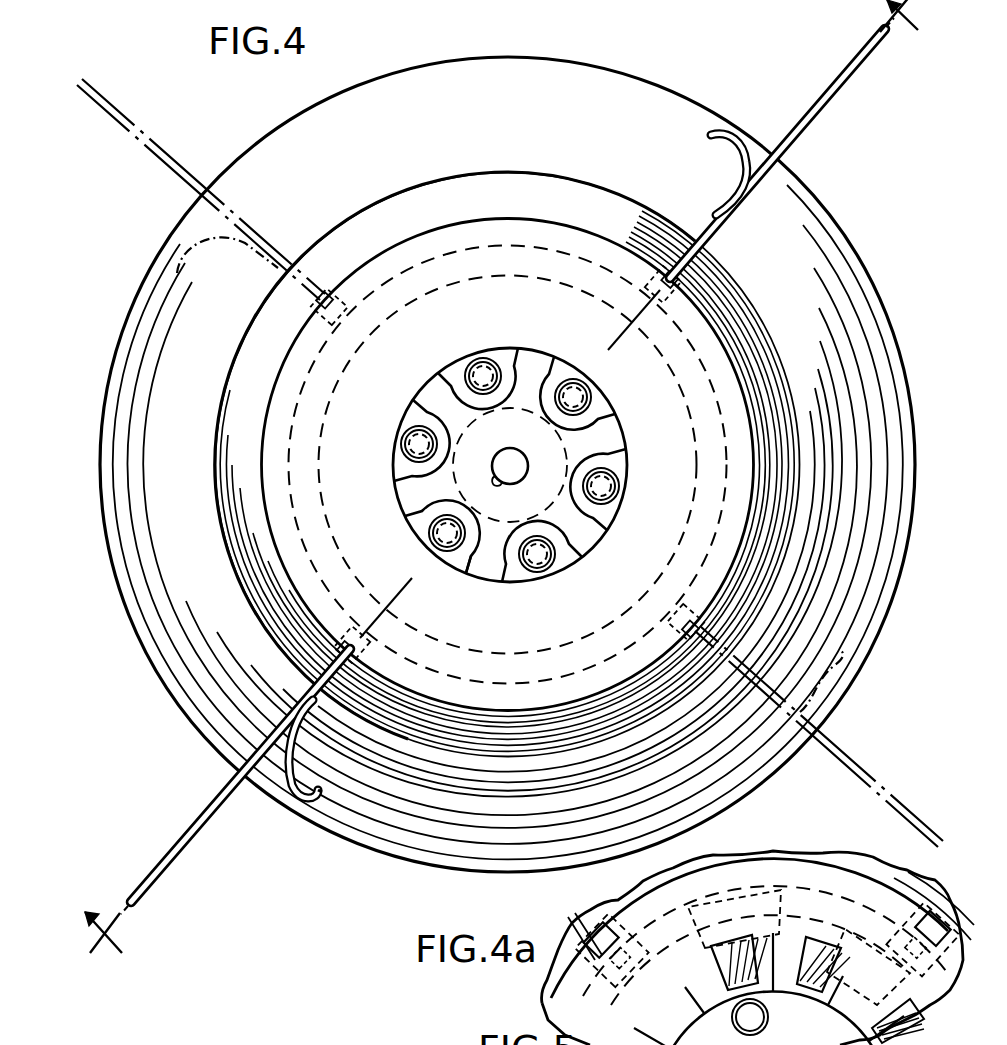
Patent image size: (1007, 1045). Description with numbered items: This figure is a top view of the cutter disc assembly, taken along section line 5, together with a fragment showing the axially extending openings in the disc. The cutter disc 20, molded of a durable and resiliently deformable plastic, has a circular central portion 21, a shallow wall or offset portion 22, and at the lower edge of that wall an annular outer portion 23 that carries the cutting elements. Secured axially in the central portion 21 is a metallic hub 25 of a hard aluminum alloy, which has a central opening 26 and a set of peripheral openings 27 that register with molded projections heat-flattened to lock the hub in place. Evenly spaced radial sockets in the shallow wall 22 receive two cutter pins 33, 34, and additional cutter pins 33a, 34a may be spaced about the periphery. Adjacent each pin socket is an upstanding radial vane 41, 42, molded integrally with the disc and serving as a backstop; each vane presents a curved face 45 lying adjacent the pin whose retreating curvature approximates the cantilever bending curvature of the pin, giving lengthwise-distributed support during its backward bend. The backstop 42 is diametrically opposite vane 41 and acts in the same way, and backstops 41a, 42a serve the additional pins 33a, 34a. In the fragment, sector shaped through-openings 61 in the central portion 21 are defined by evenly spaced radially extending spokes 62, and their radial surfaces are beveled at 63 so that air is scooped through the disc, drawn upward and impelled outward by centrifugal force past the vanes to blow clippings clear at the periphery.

In FIG. 4, the section line 5- 5 is at (509, 482).
In FIG. 4, the cutter disc 20 is at (688, 80).
In FIG. 4, the circular central portion 21 is at (672, 477).
In FIG. 4a, the circular central portion 21 is at (868, 890).
In FIG. 4, the shallow wall or offset portion 22 is at (760, 575).
In FIG. 4, the annular outer portion 23 is at (636, 157).
In FIG. 4, the metallic hub 25 is at (560, 460).
In FIG. 4, the central opening 26 is at (500, 478).
In FIG. 4, the peripheral openings 27 is at (452, 576).
In FIG. 4, the cutter pin 33 is at (817, 130).
In FIG. 4, the cutter pin 34 is at (183, 856).
In FIG. 4, the cutter pin 33a is at (150, 130).
In FIG. 4, the cutter pin 34a is at (860, 796).
In FIG. 4, the radial vane 41 is at (728, 197).
In FIG. 4, the radial vane 42 is at (325, 803).
In FIG. 4, the backstop 41a is at (226, 268).
In FIG. 4, the backstop 42a is at (830, 714).
In FIG. 4, the curved face 45 is at (745, 150).
In FIG. 4a, the sector shaped through-openings 61 is at (675, 990).
In FIG. 4a, the radially extending spokes 62 is at (700, 972).
In FIG. 4a, the beveled surfaces 63 is at (733, 955).